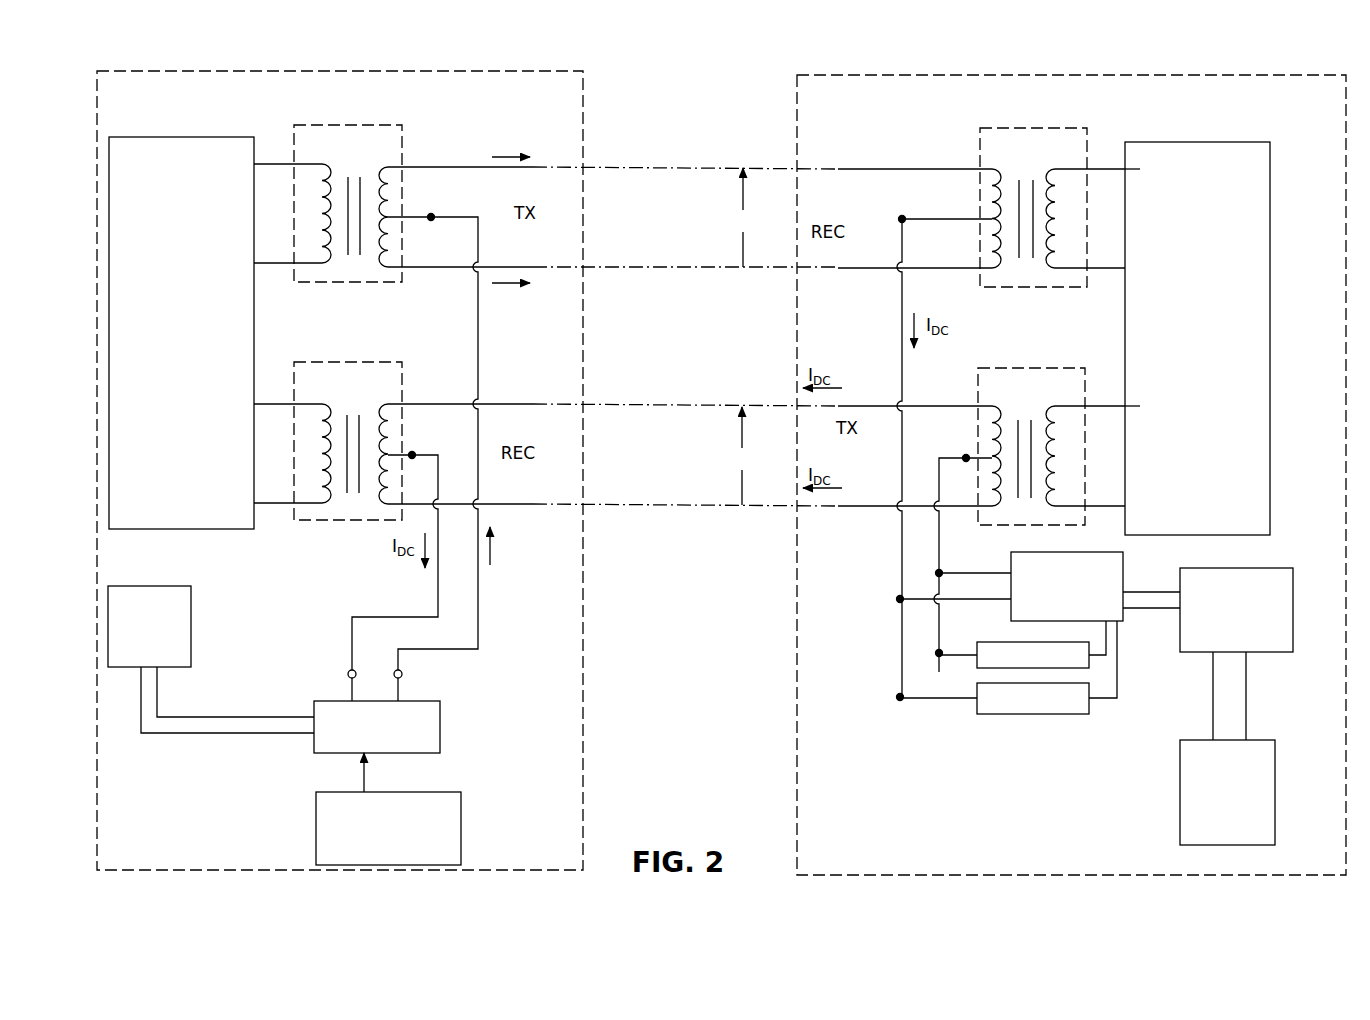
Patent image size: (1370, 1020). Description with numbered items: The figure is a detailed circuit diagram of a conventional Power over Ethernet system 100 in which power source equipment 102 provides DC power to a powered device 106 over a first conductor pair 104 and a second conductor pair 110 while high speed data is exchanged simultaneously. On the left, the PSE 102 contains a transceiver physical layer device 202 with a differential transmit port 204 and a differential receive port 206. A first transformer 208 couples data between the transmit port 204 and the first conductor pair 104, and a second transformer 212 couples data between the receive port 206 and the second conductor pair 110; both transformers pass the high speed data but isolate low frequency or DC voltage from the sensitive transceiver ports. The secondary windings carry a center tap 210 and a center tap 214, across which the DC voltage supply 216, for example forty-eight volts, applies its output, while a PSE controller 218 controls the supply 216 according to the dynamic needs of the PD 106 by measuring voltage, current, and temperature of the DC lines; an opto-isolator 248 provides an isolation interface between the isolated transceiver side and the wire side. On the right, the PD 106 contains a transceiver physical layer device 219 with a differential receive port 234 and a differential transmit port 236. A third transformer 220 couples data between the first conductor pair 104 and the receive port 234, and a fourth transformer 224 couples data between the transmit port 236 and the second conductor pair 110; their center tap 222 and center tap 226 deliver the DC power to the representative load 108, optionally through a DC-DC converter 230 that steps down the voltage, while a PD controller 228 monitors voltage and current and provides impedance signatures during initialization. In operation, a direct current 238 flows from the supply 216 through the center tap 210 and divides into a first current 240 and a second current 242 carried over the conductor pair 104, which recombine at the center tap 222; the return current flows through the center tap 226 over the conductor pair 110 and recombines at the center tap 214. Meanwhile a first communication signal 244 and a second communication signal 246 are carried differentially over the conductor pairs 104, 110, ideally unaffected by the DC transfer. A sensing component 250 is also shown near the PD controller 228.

The Power over Ethernet (PoE) system 100 is at (672, 118).
The power source equipment (PSE) 102 is at (322, 71).
The first conductor pair 104 is at (648, 235).
The powered device (PD) 106 is at (1062, 75).
The load 108 is at (1275, 785).
The second conductor pair 110 is at (648, 475).
The transceiver physical layer device (PHY) 202 is at (181, 333).
The differential transmit port 204 is at (254, 210).
The differential receive port 206 is at (254, 432).
The first transformer 208 is at (393, 203).
The center tap 210 is at (431, 217).
The second transformer 212 is at (393, 441).
The center tap 214 is at (412, 455).
The DC voltage supply 216 is at (338, 701).
The PSE controller 218 is at (332, 792).
The transceiver physical layer device 219 is at (1197, 338).
The third transformer 220 is at (981, 207).
The center tap 222 is at (902, 219).
The fourth transformer 224 is at (981, 446).
The center tap 226 is at (966, 458).
The PD controller 228 is at (1125, 585).
The DC-DC converter 230 is at (1255, 658).
The differential receive port 234 is at (1125, 216).
The differential transmit port 236 is at (1125, 440).
The direct current 238 is at (512, 555).
The first current 240 is at (497, 150).
The second current 242 is at (512, 322).
The first communication signal 244 is at (743, 217).
The second communication signal 246 is at (742, 456).
The opto-isolator 248 is at (172, 586).
The sensing resistor 250 is at (1060, 714).